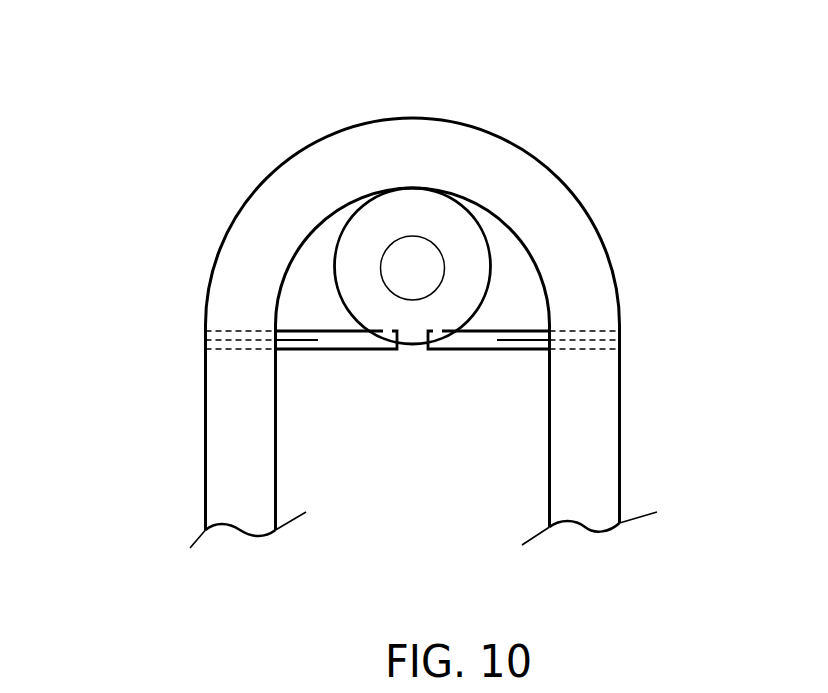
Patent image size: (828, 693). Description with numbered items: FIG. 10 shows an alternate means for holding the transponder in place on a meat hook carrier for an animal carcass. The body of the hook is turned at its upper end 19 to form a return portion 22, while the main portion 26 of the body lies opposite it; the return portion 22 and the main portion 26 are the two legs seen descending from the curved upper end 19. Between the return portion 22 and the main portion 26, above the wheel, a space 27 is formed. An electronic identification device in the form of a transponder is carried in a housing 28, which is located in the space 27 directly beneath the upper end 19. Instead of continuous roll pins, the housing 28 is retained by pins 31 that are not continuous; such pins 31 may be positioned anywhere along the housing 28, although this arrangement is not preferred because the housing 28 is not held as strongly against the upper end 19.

The upper end 19 is at (405, 130).
The space 27 is at (307, 287).
The housing 28 is at (492, 258).
The return portion 22 is at (203, 400).
The main portion 26 is at (602, 296).
The pins 31 is at (325, 338).